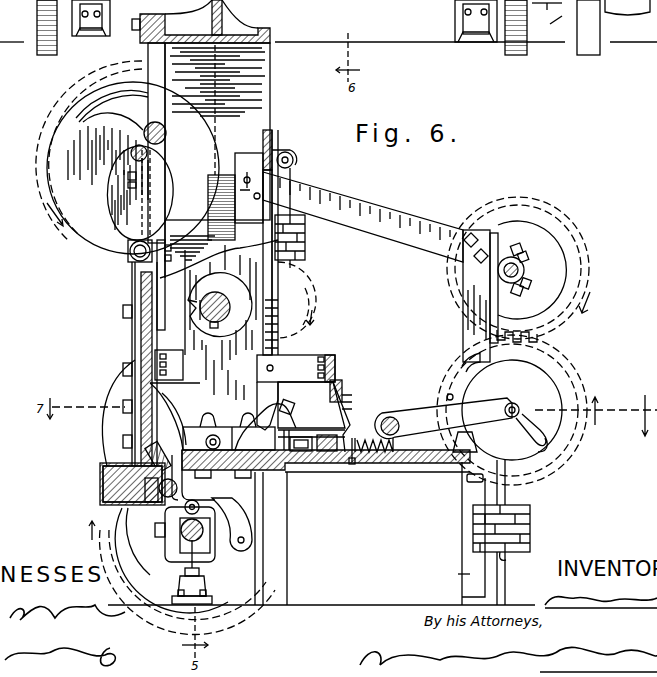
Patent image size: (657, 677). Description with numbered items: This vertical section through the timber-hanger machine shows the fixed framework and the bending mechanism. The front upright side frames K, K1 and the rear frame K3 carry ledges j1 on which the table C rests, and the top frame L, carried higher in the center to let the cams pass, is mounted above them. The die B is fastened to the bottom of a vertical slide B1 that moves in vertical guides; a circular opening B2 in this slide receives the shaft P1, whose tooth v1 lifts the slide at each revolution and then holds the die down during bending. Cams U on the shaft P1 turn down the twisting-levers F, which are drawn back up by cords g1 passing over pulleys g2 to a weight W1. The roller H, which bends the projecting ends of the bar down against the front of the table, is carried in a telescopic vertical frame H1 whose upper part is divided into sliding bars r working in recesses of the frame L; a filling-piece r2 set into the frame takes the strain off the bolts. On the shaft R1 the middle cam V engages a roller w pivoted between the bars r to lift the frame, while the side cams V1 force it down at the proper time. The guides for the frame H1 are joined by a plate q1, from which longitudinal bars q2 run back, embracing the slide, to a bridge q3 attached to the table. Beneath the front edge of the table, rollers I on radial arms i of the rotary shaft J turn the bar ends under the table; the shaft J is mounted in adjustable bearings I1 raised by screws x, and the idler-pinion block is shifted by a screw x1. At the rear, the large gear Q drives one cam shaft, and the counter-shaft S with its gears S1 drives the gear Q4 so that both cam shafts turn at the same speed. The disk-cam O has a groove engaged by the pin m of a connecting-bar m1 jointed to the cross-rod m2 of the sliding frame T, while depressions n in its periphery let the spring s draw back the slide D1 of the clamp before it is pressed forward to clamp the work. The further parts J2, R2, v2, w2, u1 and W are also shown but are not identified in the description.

The screw x is at (110, 6).
The large gear Q is at (547, 13).
The gear J2 is at (545, 28).
The filling-piece r2 is at (132, 22).
The vertical sliding bar r is at (156, 143).
The top frame L is at (314, 152).
The wheel R2 is at (127, 157).
The middle cam V is at (105, 149).
The side cam V1 is at (140, 193).
The roller w is at (166, 130).
The shaft R1 is at (131, 152).
The pulley g2 is at (293, 155).
The cord or chain g1 is at (296, 178).
The web or plate q1 is at (146, 288).
The weight W1 is at (306, 249).
The vertical slide B1 is at (219, 310).
The opening B2 is at (220, 299).
The shaft P1 is at (215, 301).
The tooth v1 is at (186, 307).
The key v2 is at (216, 332).
The nut w2 is at (130, 258).
The vertical frame H1 is at (141, 347).
The cross-frame or bridge q3 is at (259, 401).
The longitudinal bar q2 is at (296, 368).
The cam U is at (151, 415).
The upright side frame K is at (267, 406).
The twisting-lever F is at (265, 425).
The screw x1 is at (291, 404).
The sliding frame T is at (311, 416).
The slide D1 is at (313, 443).
The die B is at (229, 427).
The spring s is at (380, 458).
The table C is at (270, 478).
The roller H is at (138, 500).
The roller I is at (200, 508).
The rotary shaft J is at (182, 535).
The radial arm i is at (205, 522).
The bearing I1 is at (172, 560).
The upright side frame K1 is at (232, 536).
The gear S1 is at (518, 279).
The counter-shaft S is at (502, 270).
The disk-cam O is at (512, 410).
The gear Q4 is at (574, 374).
The depressed cam portion n is at (476, 370).
The cross-head or pin m is at (518, 404).
The connecting-bar m1 is at (443, 418).
The cross-rod m2 is at (382, 424).
The ledge j1 is at (463, 474).
The cord u1 is at (506, 492).
The weight W is at (531, 520).
The rear upright side frame K3 is at (455, 576).